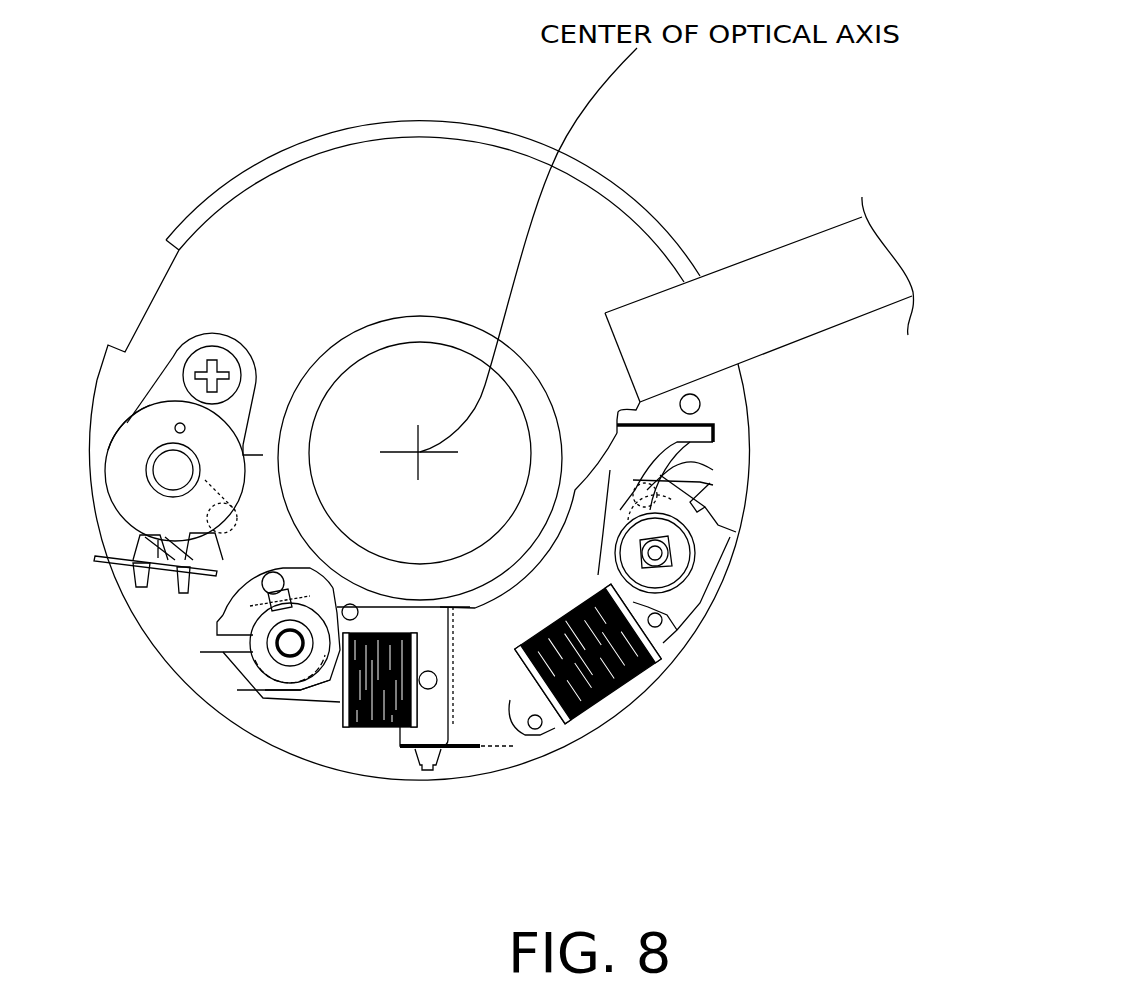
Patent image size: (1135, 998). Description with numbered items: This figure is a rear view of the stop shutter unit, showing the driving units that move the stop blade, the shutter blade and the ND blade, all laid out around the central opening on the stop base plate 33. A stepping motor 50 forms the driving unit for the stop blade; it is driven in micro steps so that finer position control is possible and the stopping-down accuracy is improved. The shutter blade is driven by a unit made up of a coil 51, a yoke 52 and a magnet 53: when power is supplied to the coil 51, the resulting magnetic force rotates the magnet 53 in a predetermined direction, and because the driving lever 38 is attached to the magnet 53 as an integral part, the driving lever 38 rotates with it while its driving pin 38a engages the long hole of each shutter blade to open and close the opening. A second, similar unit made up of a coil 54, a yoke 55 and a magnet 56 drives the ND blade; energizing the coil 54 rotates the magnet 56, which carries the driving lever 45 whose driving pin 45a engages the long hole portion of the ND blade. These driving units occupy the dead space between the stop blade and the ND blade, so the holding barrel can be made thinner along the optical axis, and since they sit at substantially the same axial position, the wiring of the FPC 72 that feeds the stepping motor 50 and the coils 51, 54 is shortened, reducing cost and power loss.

The stop base plate 33 is at (247, 233).
The FPC 72 is at (723, 297).
The driving lever 38 is at (700, 484).
The driving pin 38a is at (713, 470).
The stepping motor 50 is at (132, 425).
The driving lever 45 is at (247, 648).
The driving pin 45a is at (256, 664).
The magnet 56 is at (263, 688).
The yoke 55 is at (307, 697).
The coil 54 is at (375, 730).
The coil 51 is at (613, 700).
The magnet 53 is at (677, 577).
The yoke 52 is at (675, 608).